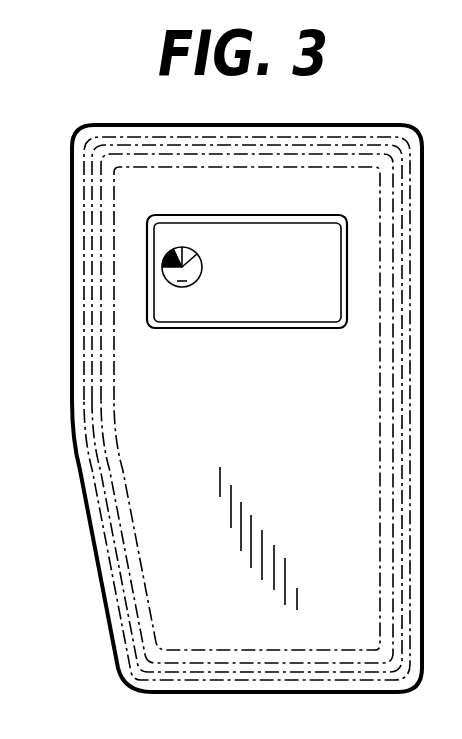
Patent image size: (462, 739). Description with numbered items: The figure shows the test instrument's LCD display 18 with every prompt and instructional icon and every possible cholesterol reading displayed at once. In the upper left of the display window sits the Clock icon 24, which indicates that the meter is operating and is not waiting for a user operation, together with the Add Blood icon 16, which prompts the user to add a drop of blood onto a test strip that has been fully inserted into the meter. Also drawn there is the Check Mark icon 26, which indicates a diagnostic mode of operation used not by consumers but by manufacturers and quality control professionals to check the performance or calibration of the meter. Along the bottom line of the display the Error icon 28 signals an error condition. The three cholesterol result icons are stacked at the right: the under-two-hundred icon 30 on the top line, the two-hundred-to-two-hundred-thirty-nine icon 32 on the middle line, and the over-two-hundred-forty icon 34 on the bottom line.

The Add Blood icon 16 is at (164, 257).
The LCD display 18 is at (228, 384).
The Clock icon 24 is at (187, 251).
The Check Mark icon 26 is at (178, 285).
The Error icon 28 is at (189, 316).
The Under 200 icon 30 is at (336, 247).
The 200 to 239 icon 32 is at (338, 277).
The Over 240 icon 34 is at (328, 312).